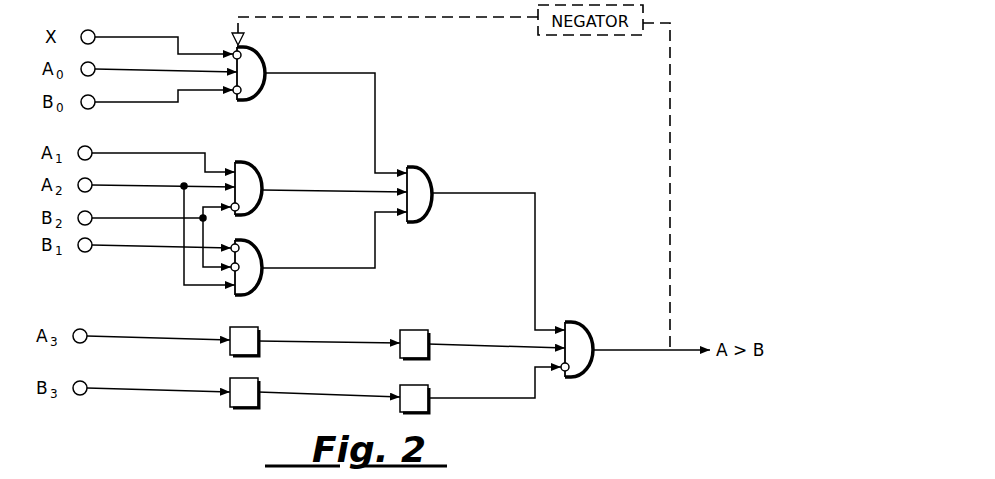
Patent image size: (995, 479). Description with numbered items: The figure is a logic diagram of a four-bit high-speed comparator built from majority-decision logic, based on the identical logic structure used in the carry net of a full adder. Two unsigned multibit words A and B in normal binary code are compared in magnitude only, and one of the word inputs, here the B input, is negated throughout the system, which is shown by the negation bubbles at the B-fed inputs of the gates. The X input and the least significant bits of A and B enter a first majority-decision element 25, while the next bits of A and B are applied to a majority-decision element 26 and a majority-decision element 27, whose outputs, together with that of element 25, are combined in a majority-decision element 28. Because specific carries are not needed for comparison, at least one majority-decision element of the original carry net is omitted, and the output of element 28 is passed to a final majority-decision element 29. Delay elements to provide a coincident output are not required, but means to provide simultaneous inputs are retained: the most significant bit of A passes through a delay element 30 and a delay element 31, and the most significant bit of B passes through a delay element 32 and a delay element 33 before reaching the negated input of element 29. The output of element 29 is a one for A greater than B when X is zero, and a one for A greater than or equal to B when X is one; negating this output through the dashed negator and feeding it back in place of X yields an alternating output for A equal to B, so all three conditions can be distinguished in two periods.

The majority-decision element 25 is at (250, 48).
The majority-decision element 26 is at (247, 167).
The majority-decision element 27 is at (247, 245).
The majority-decision element 28 is at (424, 172).
The majority-decision element 29 is at (580, 326).
The delay element 30 is at (256, 327).
The delay element 31 is at (420, 330).
The delay element 32 is at (256, 378).
The delay element 33 is at (420, 385).